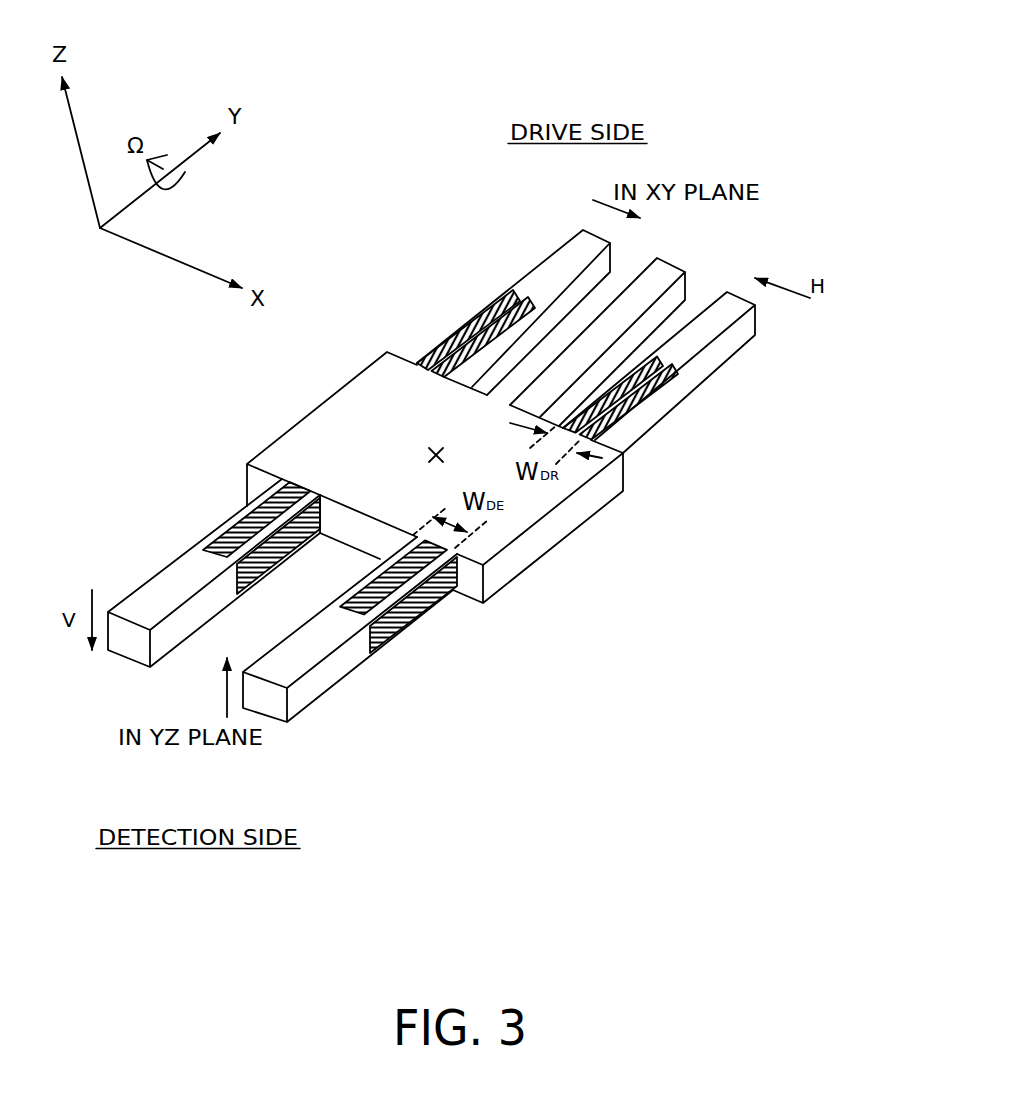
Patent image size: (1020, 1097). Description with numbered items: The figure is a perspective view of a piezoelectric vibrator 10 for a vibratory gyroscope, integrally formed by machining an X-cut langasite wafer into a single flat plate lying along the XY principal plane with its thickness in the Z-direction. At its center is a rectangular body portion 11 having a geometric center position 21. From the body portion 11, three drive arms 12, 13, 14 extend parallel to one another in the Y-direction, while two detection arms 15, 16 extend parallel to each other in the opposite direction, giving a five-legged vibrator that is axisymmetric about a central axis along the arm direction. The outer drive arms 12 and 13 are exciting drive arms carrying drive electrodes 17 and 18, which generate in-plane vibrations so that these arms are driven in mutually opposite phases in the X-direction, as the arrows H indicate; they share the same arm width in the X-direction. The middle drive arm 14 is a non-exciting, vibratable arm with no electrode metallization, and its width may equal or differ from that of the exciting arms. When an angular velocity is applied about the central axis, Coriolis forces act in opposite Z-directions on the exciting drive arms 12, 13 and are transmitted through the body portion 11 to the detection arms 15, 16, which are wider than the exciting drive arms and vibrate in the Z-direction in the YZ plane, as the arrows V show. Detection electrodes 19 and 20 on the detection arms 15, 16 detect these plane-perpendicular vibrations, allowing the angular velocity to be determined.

The piezoelectric vibrator 10 is at (667, 77).
The body portion 11 is at (587, 507).
The drive arm 12 is at (567, 243).
The drive arm 13 is at (735, 325).
The drive arm 14 is at (678, 253).
The detection arm 15 is at (143, 655).
The detection arm 16 is at (312, 687).
The drive electrode 17 is at (467, 322).
The drive electrode 18 is at (665, 415).
The detection electrode 19 is at (252, 507).
The detection electrode 20 is at (403, 628).
The geometric center position 21 is at (430, 447).